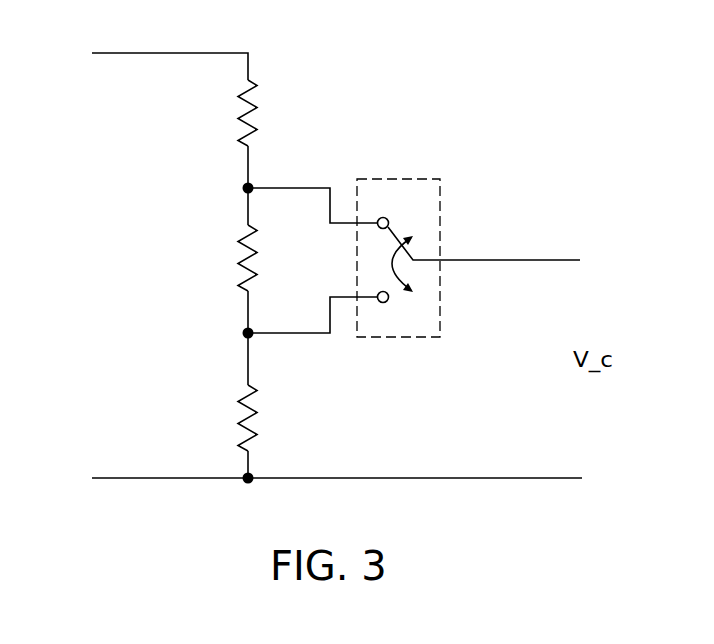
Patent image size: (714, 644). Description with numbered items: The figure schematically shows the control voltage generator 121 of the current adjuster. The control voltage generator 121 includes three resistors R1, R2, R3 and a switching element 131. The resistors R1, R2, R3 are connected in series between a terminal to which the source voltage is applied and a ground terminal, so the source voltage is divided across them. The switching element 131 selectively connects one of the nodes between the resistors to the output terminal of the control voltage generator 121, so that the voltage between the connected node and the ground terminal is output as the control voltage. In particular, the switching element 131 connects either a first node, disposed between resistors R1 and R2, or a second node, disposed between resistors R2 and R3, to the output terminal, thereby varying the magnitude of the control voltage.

The control voltage generator 121 is at (328, 109).
The switching element 131 is at (420, 179).
The resistor R1 is at (230, 113).
The resistor R2 is at (230, 258).
The resistor R3 is at (227, 418).